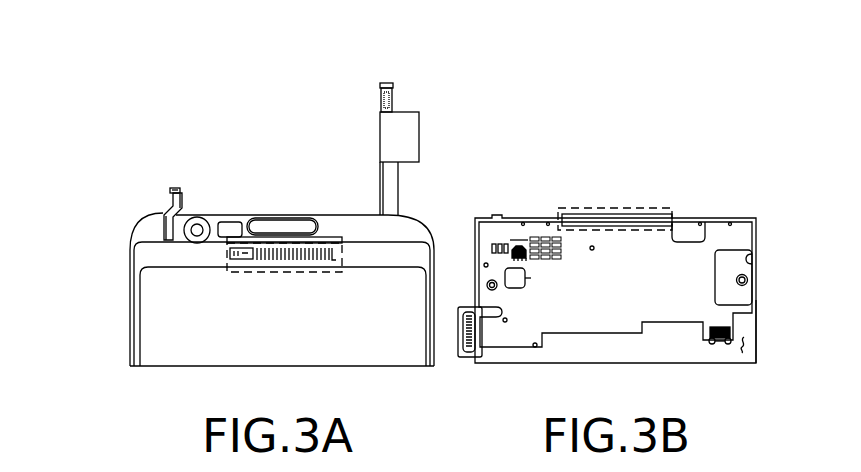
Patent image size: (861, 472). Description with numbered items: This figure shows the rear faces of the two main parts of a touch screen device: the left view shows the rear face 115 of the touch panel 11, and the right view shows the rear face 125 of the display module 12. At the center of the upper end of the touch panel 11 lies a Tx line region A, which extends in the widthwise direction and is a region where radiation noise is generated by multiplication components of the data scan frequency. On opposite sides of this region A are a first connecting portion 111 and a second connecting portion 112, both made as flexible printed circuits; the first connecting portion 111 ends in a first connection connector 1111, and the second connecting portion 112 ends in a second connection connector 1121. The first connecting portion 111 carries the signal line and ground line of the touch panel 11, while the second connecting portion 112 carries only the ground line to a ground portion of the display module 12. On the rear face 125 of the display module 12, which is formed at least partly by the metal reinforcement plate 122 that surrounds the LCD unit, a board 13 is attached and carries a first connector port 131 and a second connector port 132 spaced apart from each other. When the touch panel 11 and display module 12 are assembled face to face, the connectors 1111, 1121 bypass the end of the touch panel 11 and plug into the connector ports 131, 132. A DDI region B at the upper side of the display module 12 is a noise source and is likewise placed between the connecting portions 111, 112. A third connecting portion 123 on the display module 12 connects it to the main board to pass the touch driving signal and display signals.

In FIG. 3A, the touch panel 11 is at (110, 270).
In FIG. 3A, the first connecting portion 111 is at (405, 140).
In FIG. 3A, the first connection connector 1111 is at (383, 84).
In FIG. 3A, the second connecting portion 112 is at (173, 201).
In FIG. 3A, the second connection connector 1121 is at (172, 190).
In FIG. 3A, the rear face of the touch panel 115 is at (155, 330).
In FIG. 3A, the Tx line region A is at (331, 232).
In FIG. 3B, the display module 12 is at (774, 209).
In FIG. 3B, the board 13 is at (737, 239).
In FIG. 3B, the DDI region B is at (633, 208).
In FIG. 3B, the first connector port 131 is at (722, 327).
In FIG. 3B, the second connector port 132 is at (518, 244).
In FIG. 3B, the rear face of the display module 125 is at (746, 342).
In FIG. 3B, the reinforcement plate 122 is at (757, 353).
In FIG. 3B, the third connecting portion 123 is at (465, 338).